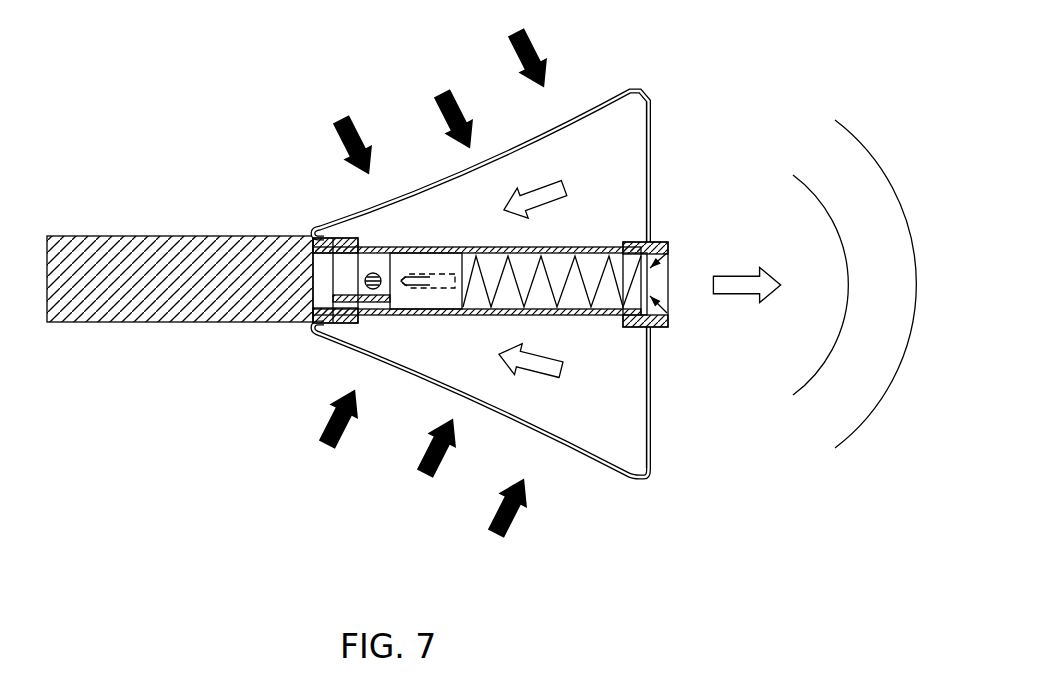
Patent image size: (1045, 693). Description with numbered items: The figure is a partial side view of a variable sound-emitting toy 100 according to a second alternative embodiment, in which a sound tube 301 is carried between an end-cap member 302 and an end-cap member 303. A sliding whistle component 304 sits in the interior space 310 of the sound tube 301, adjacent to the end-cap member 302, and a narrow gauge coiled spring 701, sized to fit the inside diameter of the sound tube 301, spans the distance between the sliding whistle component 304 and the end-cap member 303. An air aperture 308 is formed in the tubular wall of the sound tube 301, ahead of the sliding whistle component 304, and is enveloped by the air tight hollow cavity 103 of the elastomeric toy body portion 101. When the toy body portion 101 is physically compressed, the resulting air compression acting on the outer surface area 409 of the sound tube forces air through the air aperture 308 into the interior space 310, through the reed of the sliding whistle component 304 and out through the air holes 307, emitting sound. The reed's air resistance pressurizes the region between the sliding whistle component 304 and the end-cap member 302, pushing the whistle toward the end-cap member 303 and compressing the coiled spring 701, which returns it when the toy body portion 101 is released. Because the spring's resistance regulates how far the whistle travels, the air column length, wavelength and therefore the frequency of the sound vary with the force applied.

The toy 100 is at (677, 433).
The toy body portion 101 is at (500, 408).
The air tight hollow cavity 103 is at (438, 340).
The sound tube 301 is at (470, 245).
The end-cap member 302 is at (168, 236).
The end-cap member 303 is at (662, 241).
The sliding whistle component 304 is at (432, 300).
The air holes 307 is at (668, 252).
The air aperture 308 is at (368, 272).
The interior space 310 is at (573, 296).
The outer surface area 409 is at (450, 243).
The coiled spring 701 is at (588, 270).